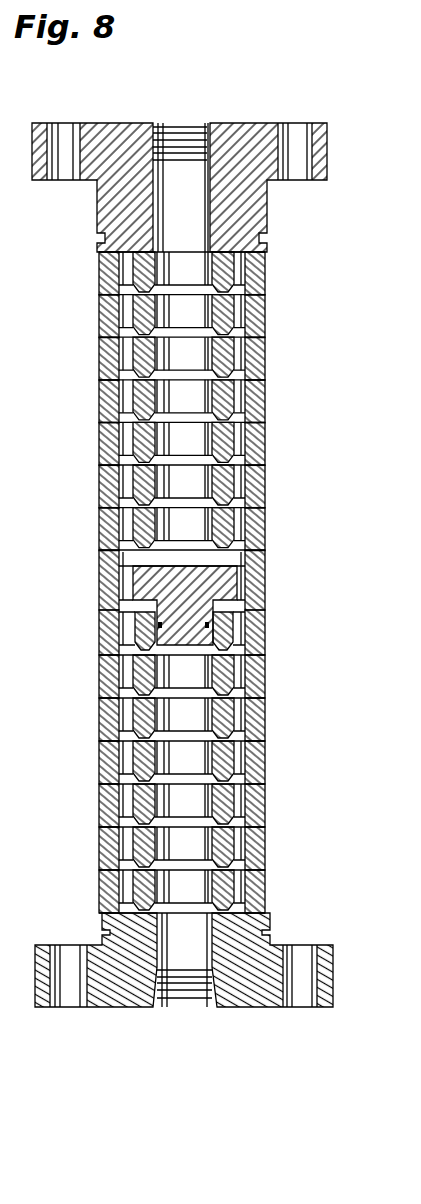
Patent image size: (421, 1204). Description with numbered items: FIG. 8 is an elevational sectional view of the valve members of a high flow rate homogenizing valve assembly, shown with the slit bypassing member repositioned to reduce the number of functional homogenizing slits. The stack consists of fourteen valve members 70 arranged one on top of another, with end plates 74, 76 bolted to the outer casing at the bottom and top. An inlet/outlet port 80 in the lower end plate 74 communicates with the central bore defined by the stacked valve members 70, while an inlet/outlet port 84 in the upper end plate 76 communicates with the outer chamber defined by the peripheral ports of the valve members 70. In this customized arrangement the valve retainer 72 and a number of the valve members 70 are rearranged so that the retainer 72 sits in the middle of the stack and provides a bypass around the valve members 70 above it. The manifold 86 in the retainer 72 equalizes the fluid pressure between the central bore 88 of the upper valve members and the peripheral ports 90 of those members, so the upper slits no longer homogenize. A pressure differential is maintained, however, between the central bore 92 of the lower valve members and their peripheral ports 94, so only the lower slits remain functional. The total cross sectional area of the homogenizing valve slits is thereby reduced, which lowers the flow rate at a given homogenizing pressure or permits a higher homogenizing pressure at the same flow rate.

The valve members 70 is at (266, 392).
The valve retainer 72 is at (270, 584).
The end plate 74 is at (128, 1007).
The end plate 76 is at (247, 123).
The inlet/outlet port 80 is at (193, 1000).
The inlet/outlet port 84 is at (194, 127).
The manifold 86 is at (133, 558).
The central bore of the upper valve members 88 is at (197, 445).
The peripheral ports of the upper valve members 90 is at (130, 435).
The central bore of the lower valve members 92 is at (203, 765).
The peripheral ports of the lower valve members 94 is at (128, 762).